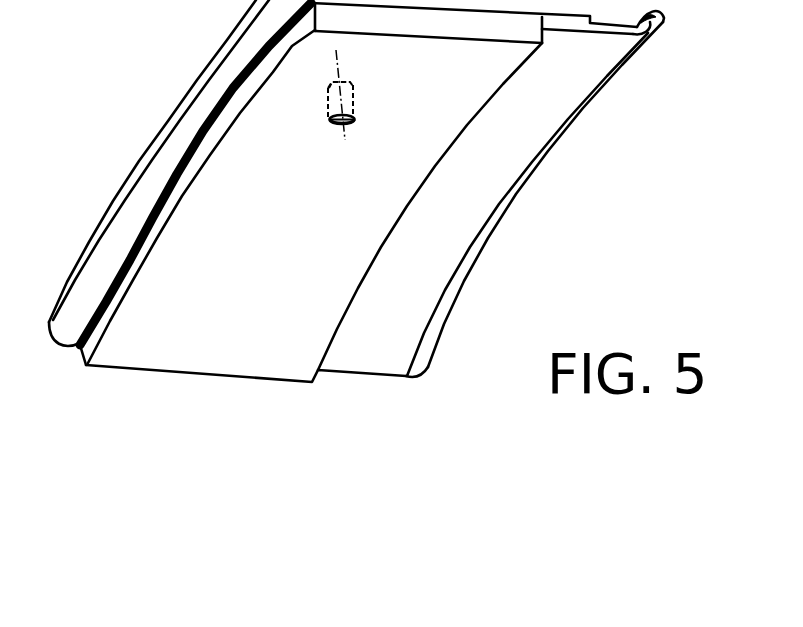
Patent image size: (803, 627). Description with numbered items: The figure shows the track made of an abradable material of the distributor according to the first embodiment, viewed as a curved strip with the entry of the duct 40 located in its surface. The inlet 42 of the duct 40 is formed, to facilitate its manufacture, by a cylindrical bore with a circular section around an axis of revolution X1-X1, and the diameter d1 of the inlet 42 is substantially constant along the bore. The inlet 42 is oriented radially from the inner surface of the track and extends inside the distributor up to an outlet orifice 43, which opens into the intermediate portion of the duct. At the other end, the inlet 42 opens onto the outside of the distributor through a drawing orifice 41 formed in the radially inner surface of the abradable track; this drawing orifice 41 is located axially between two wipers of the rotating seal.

The duct 40 is at (320, 97).
The drawing orifice 41 is at (355, 125).
The inlet 42 is at (342, 124).
The outlet orifice 43 is at (329, 86).
The diameter of the inlet d1 is at (332, 119).
The axis of revolution X1-X1 is at (353, 97).